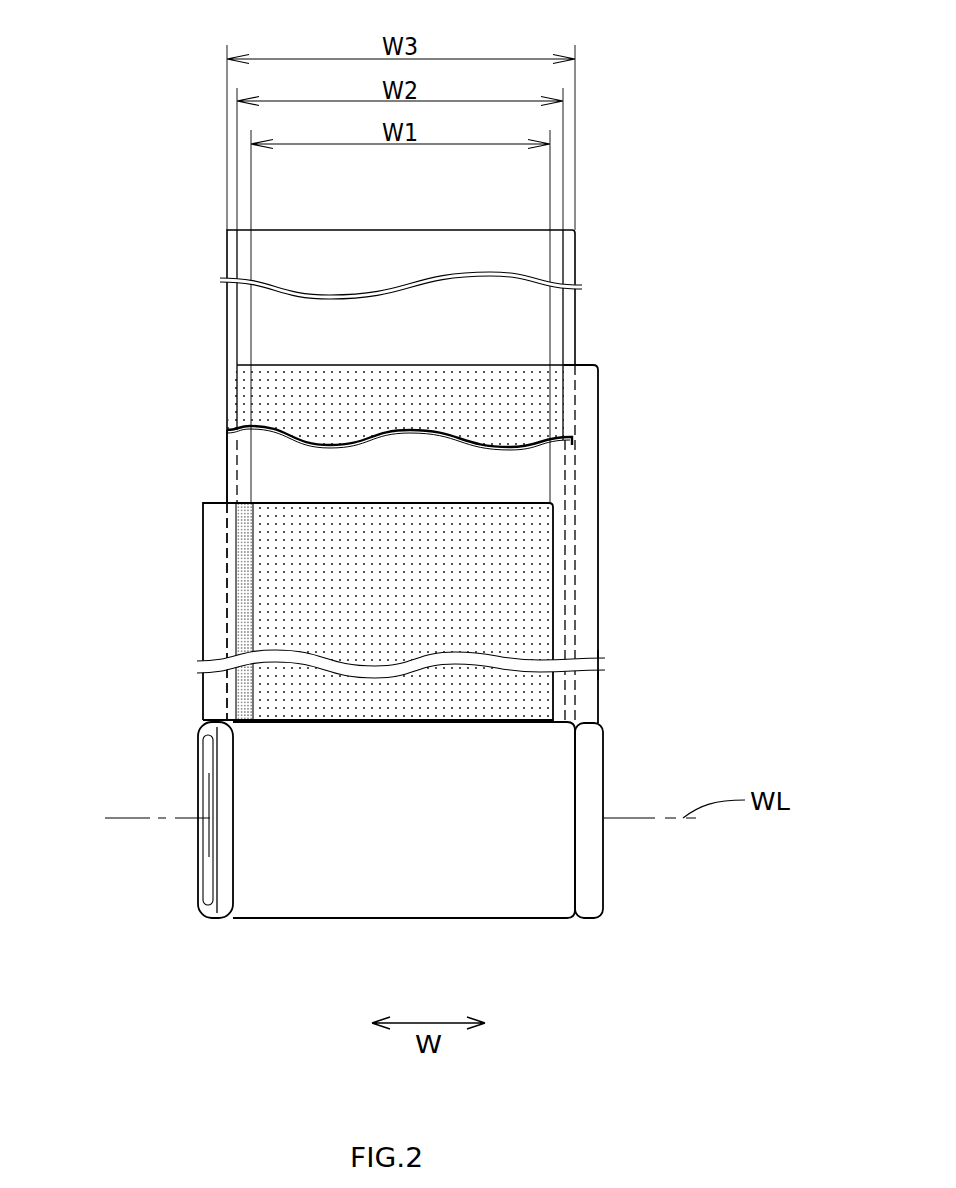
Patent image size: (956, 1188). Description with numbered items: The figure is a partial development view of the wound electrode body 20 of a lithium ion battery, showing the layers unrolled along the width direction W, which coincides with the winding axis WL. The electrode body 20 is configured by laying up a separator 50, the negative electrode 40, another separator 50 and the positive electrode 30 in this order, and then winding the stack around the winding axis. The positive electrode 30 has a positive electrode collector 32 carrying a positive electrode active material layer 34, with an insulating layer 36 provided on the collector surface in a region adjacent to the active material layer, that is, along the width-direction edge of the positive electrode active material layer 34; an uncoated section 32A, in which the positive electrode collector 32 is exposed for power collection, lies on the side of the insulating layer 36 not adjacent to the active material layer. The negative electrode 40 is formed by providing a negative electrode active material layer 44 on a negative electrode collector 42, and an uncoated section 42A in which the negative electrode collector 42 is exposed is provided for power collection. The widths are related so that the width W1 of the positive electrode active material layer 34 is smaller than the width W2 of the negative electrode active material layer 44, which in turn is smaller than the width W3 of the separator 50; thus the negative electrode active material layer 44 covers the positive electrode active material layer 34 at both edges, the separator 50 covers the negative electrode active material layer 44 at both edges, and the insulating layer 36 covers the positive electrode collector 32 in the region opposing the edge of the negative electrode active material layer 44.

The wound electrode body 20 is at (647, 207).
The positive electrode 30 is at (382, 610).
The positive electrode collector 32 is at (203, 523).
The uncoated section 32A is at (213, 645).
The positive electrode active material layer 34 is at (283, 603).
The insulating layer 36 is at (240, 619).
The negative electrode 40 is at (476, 516).
The negative electrode collector 42 is at (598, 548).
The uncoated section 42A is at (587, 497).
The negative electrode active material layer 44 is at (497, 397).
The separator 50 is at (227, 333).